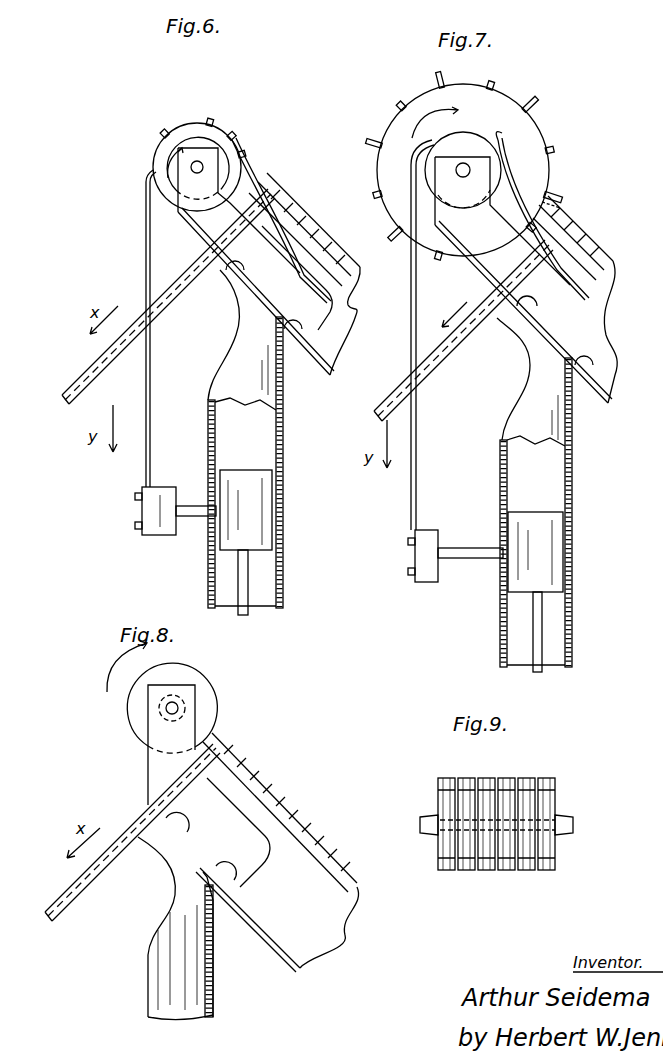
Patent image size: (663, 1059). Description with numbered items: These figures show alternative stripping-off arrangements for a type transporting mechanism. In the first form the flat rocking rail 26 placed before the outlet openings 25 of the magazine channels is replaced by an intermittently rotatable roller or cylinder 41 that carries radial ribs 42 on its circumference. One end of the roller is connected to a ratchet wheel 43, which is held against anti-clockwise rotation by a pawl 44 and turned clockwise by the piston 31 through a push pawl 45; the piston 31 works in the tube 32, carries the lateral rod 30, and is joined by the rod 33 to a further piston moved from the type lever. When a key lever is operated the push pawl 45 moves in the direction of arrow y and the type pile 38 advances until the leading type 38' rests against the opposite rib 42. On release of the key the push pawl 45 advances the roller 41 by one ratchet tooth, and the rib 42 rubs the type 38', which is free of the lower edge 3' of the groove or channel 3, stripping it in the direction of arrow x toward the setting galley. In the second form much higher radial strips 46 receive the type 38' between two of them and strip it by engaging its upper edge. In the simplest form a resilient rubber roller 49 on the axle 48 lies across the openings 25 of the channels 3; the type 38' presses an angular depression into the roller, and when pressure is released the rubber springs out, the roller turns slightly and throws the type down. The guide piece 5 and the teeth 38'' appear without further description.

In FIG. 6, the groove or channel 3 is at (214, 296).
In FIG. 7, the groove or channel 3 is at (509, 321).
In FIG. 8, the groove or channel 3 is at (219, 858).
In FIG. 6, the lower edge of groove or channel 3' is at (239, 274).
In FIG. 7, the lower edge of groove or channel 3' is at (502, 298).
In FIG. 8, the lower edge of groove or channel 3' is at (169, 852).
In FIG. 7, the guide band 5 is at (411, 337).
In FIG. 8, the outlet openings 25 is at (206, 765).
In FIG. 7, the flat rail 26 is at (560, 206).
In FIG. 6, the lateral rod 30 is at (190, 505).
In FIG. 7, the lateral rod 30 is at (468, 546).
In FIG. 6, the piston 31 is at (262, 522).
In FIG. 7, the piston 31 is at (562, 532).
In FIG. 6, the tube 32 is at (283, 572).
In FIG. 7, the tube 32 is at (572, 614).
In FIG. 6, the rod 33 is at (248, 606).
In FIG. 7, the rod 33 is at (542, 662).
In FIG. 8, the type pile 38 is at (280, 812).
In FIG. 6, the leading type 38' is at (313, 213).
In FIG. 7, the leading type 38' is at (588, 228).
In FIG. 8, the leading type 38' is at (248, 723).
In FIG. 6, the rack teeth 38'' is at (300, 234).
In FIG. 7, the rack teeth 38'' is at (582, 242).
In FIG. 8, the rack teeth 38'' is at (269, 746).
In FIG. 6, the roller or cylinder 41 is at (176, 132).
In FIG. 7, the roller or cylinder 41 is at (413, 112).
In FIG. 6, the radial ribs 42 is at (214, 128).
In FIG. 6, the ratchet wheel 43 is at (228, 148).
In FIG. 7, the ratchet wheel 43 is at (472, 135).
In FIG. 6, the pawl 44 is at (240, 207).
In FIG. 7, the pawl 44 is at (520, 182).
In FIG. 6, the push pawl 45 is at (146, 216).
In FIG. 7, the push pawl 45 is at (416, 462).
In FIG. 7, the radial strips 46 is at (538, 106).
In FIG. 8, the axle 48 is at (170, 708).
In FIG. 9, the axle 48 is at (562, 812).
In FIG. 8, the resilient roller 49 is at (202, 686).
In FIG. 9, the resilient roller 49 is at (453, 779).